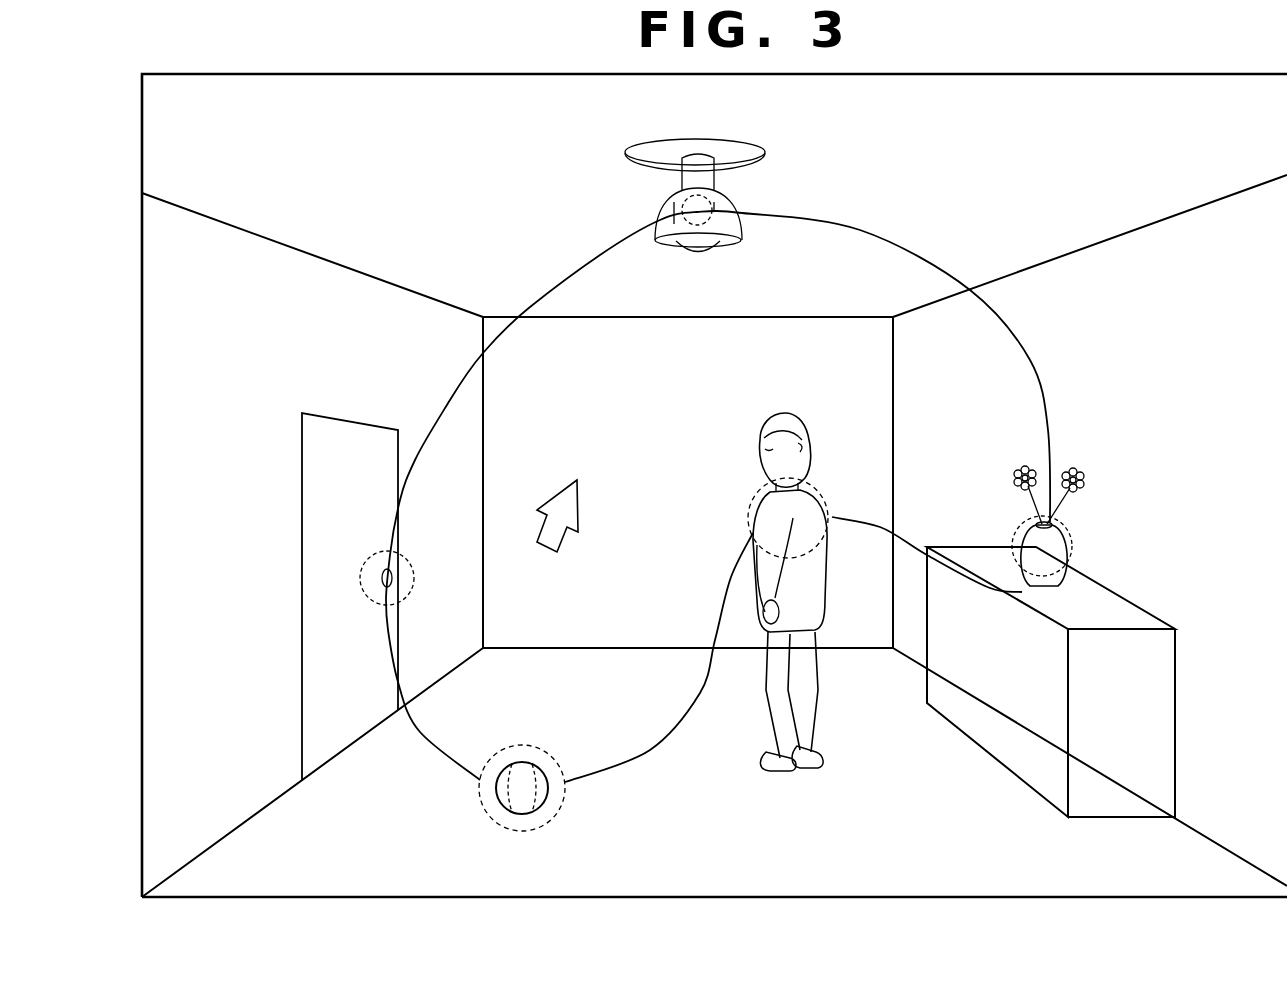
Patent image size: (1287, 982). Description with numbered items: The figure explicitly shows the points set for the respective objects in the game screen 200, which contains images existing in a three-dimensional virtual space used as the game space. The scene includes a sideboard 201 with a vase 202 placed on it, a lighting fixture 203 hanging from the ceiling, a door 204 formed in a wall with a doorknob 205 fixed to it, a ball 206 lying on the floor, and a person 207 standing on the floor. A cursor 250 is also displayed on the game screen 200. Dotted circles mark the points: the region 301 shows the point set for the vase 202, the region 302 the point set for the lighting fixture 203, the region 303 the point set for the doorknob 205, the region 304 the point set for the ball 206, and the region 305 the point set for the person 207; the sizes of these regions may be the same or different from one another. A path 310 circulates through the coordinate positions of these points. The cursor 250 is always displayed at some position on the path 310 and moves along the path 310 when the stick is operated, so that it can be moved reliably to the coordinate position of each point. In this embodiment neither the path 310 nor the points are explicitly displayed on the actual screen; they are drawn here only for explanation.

The game screen 200 is at (987, 74).
The sideboard 201 is at (1000, 750).
The vase 202 is at (1062, 570).
The lighting fixture 203 is at (728, 196).
The door 204 is at (359, 440).
The doorknob 205 is at (382, 578).
The ball 206 is at (545, 775).
The person 207 is at (787, 415).
The cursor 250 is at (580, 510).
The region 301 is at (1072, 526).
The region 302 is at (668, 202).
The region 303 is at (415, 580).
The region 304 is at (480, 798).
The region 305 is at (830, 513).
The path 310 is at (890, 236).